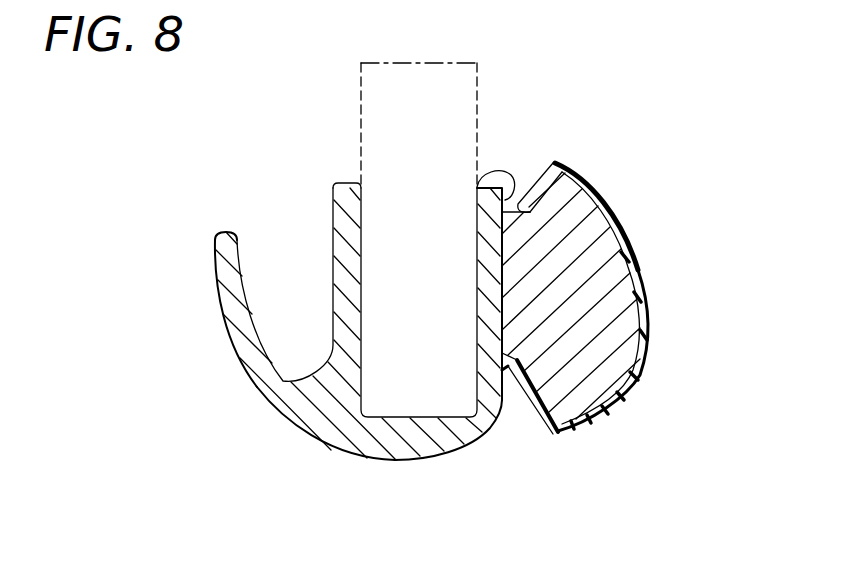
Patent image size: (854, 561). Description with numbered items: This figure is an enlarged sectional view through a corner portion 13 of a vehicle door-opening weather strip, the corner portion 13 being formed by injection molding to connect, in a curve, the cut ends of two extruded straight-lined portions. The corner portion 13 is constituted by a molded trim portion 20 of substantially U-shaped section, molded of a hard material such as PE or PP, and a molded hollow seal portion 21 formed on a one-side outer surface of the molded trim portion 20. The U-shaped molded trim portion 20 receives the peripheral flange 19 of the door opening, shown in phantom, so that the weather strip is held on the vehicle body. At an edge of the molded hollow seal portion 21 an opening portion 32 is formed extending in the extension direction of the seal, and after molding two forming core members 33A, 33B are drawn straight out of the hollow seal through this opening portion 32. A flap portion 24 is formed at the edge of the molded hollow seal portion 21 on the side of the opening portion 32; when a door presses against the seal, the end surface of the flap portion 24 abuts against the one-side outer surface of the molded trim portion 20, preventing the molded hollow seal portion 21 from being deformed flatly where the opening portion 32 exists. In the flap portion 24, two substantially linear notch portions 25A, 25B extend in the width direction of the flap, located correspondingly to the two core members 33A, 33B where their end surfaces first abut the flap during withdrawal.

The corner portion 13 is at (249, 414).
The flange 19 is at (360, 105).
The molded trim portion 20 is at (396, 460).
The molded hollow seal portion 21 is at (637, 243).
The flap portion 24 is at (540, 190).
The notch portion 25A is at (656, 104).
The notch portion 25B is at (603, 113).
The opening portion 32 is at (478, 186).
The forming core member 33A is at (692, 303).
The forming core member 33B is at (617, 339).